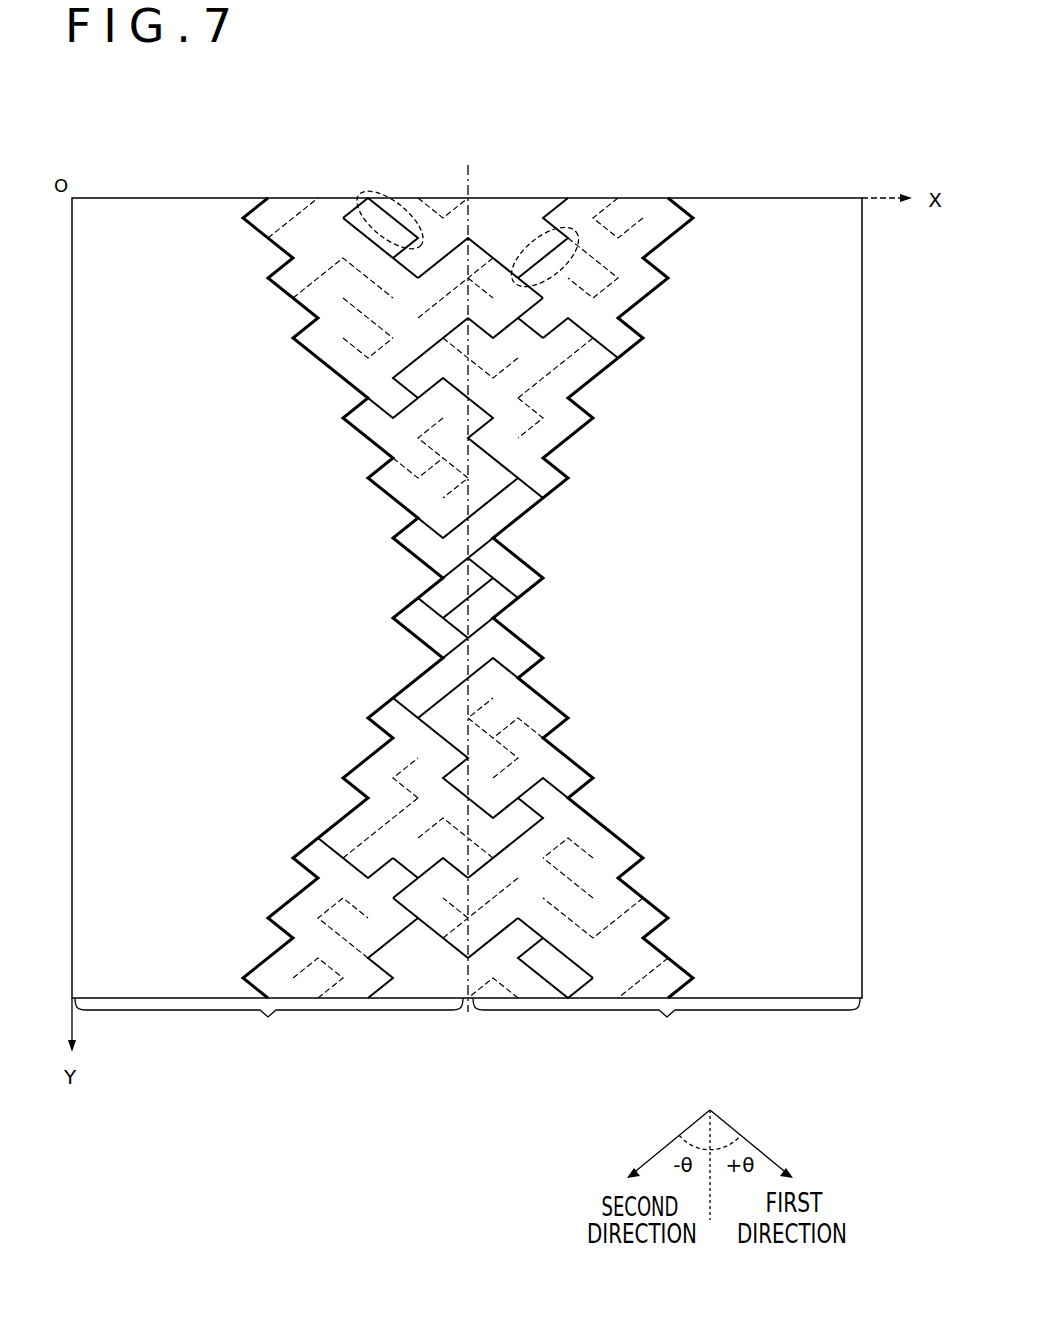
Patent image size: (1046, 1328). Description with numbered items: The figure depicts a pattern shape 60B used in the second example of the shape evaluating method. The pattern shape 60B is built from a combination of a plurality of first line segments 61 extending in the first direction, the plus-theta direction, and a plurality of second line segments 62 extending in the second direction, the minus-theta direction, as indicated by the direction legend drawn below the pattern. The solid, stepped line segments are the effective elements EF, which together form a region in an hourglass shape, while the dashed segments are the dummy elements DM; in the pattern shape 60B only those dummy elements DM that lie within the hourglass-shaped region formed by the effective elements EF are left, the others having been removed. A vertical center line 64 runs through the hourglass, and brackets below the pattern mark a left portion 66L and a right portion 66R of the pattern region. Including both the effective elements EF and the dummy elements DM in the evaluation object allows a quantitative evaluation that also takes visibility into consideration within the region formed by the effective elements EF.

The pattern shape 60B is at (175, 174).
The first line segments 61 is at (412, 196).
The second line segments 62 is at (540, 236).
The effective elements EF is at (681, 196).
The dummy elements DM is at (330, 238).
The center line 64 is at (468, 1012).
The left half region 66L is at (269, 1022).
The right half region 66R is at (666, 1022).